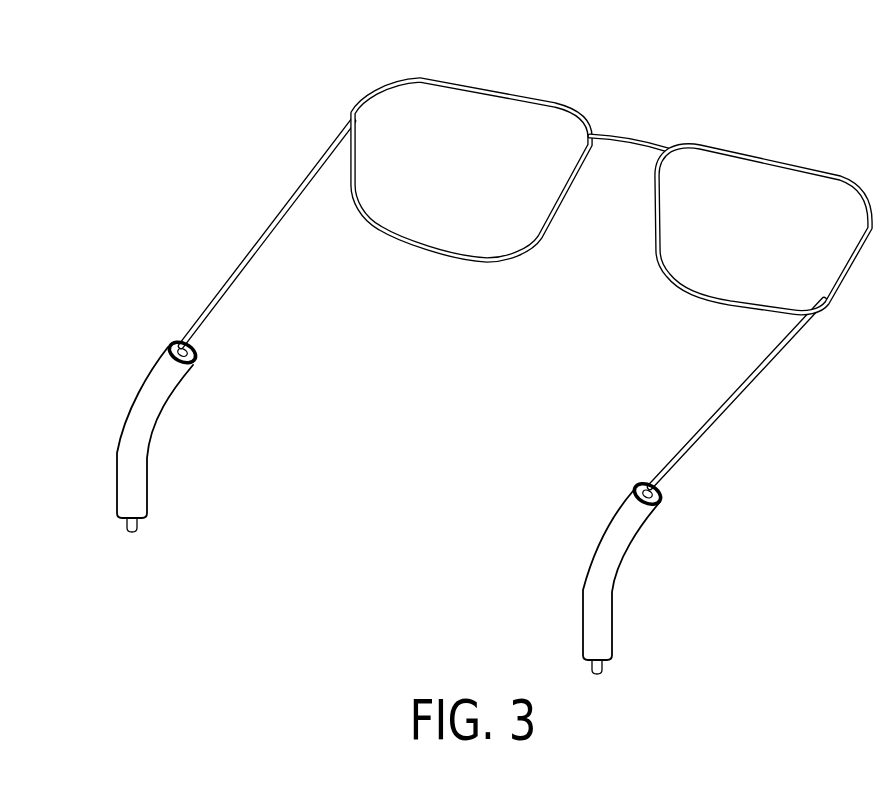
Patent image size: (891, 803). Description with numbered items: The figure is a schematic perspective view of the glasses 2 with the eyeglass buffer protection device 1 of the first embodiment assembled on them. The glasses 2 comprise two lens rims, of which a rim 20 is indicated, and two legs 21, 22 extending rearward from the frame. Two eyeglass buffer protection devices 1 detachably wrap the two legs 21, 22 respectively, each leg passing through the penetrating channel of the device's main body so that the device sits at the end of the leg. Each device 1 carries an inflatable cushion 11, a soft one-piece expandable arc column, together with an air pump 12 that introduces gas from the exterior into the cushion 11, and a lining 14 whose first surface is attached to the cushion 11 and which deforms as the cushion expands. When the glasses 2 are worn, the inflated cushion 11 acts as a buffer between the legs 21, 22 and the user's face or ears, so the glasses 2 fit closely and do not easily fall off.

The eyeglass buffer protection device 1 is at (406, 472).
The inflatable cushion 11 is at (188, 354).
The air pump 12 is at (170, 343).
The lining 14 is at (163, 385).
The glasses 2 is at (762, 150).
The lens rim 20 is at (565, 107).
The leg 21 is at (733, 403).
The leg 22 is at (252, 250).